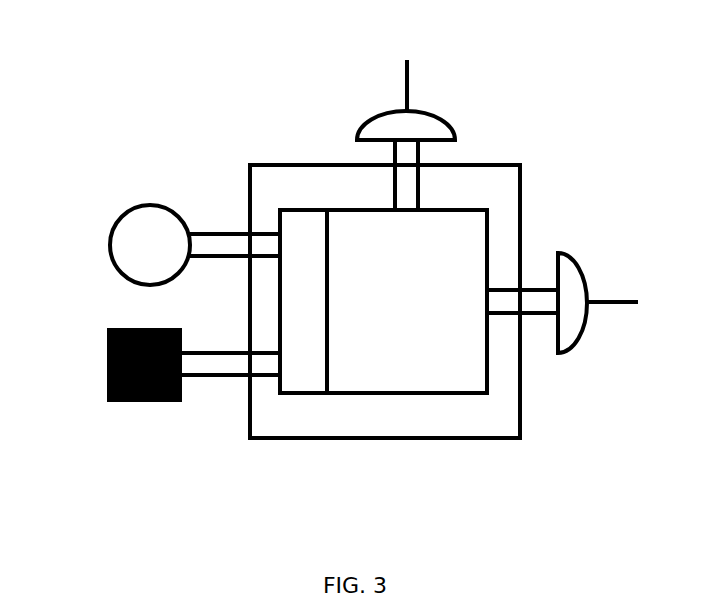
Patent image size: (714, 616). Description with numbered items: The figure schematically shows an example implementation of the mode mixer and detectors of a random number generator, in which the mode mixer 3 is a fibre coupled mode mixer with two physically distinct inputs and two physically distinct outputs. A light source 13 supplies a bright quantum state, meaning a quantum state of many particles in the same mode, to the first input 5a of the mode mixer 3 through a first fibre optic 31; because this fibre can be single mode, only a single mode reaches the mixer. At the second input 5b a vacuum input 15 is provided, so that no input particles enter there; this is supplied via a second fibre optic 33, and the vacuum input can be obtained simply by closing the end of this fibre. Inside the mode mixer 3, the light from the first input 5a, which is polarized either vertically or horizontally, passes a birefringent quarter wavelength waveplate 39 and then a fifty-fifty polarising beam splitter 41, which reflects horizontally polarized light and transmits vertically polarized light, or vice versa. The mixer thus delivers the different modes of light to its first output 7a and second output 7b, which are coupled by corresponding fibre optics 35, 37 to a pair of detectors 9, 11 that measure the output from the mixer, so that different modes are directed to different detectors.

The mode mixer 3 is at (463, 440).
The first input 5a is at (247, 247).
The second input 5b is at (248, 363).
The first output 7a is at (410, 163).
The second output 7b is at (513, 302).
The detector 9 is at (397, 112).
The detector 11 is at (580, 330).
The light source 13 is at (122, 239).
The vacuum input 15 is at (107, 370).
The first fibre optic 31 is at (198, 230).
The second fibre optic 33 is at (213, 373).
The fibre optic 35 is at (397, 157).
The fibre optic 37 is at (540, 290).
The quarter wavelength waveplate 39 is at (300, 365).
The polarising beam splitter 41 is at (398, 368).